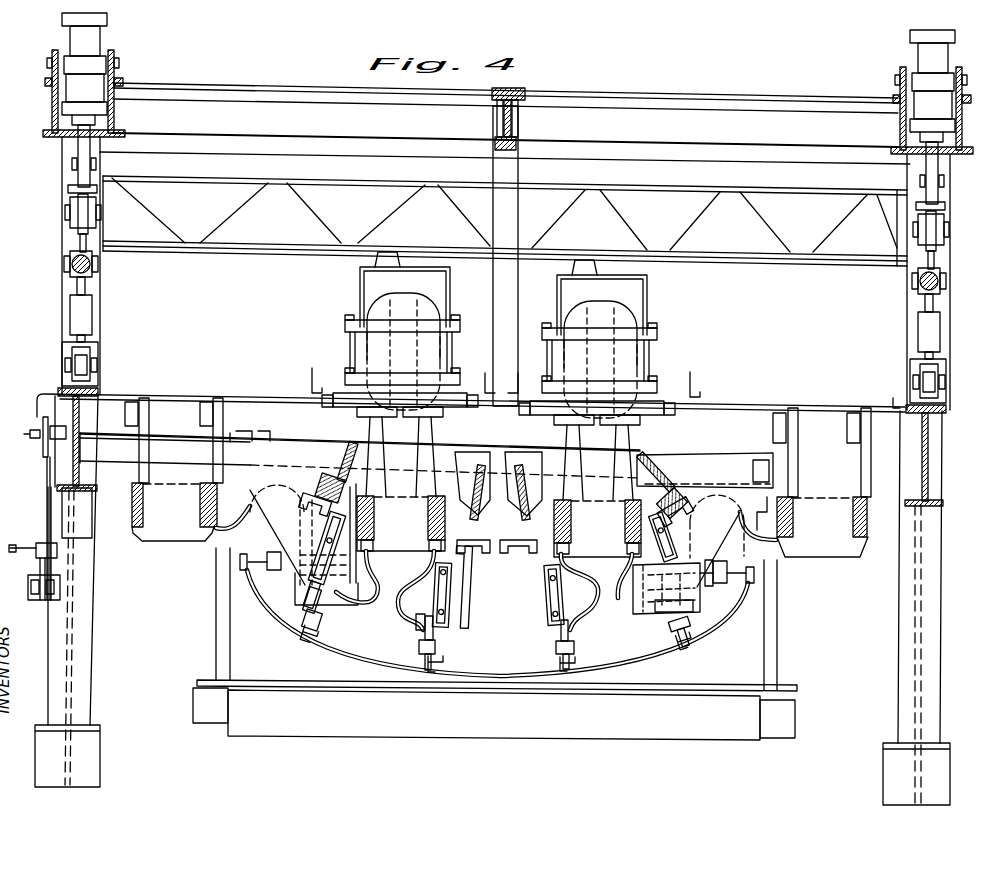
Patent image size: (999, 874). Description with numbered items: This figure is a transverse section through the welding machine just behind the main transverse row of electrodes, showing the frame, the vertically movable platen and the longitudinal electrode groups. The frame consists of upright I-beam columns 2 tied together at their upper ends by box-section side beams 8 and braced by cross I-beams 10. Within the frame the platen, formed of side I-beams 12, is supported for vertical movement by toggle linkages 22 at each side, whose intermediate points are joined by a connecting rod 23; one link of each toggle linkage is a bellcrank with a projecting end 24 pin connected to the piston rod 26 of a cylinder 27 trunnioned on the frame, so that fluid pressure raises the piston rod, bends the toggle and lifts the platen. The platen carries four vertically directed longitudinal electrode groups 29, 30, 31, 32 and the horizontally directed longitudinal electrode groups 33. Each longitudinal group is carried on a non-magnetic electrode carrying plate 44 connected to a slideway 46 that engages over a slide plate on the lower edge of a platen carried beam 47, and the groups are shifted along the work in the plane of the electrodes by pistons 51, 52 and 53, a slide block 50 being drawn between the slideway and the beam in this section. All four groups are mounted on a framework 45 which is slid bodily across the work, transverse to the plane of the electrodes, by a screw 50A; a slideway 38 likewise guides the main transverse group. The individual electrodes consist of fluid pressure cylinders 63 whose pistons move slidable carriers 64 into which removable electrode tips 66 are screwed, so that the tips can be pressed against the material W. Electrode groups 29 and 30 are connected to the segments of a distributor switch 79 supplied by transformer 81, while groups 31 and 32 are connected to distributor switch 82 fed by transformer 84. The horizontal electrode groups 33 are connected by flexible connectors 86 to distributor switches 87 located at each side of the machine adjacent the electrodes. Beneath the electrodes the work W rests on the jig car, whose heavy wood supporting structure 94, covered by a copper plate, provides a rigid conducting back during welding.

The upright I-beam column 2 is at (88, 647).
The side beam 8 is at (56, 93).
The cross I-beam 10 is at (524, 94).
The side I-beam 12 is at (73, 467).
The toggle linkage 22 is at (76, 315).
The connecting rod 23 is at (68, 265).
The projecting end 24 is at (78, 230).
The piston rod 26 is at (77, 147).
The cylinder 27 is at (508, 77).
The electrode group 29 is at (320, 620).
The electrode group 30 is at (435, 647).
The electrode group 31 is at (574, 643).
The electrode group 32 is at (674, 630).
The horizontally directed electrode group 33 is at (262, 575).
The slideway 38 is at (728, 566).
The non-magnetic electrode carrying plate 44 is at (330, 547).
The framework 45 is at (270, 454).
The slideway 46 is at (312, 511).
The platen carried beam 47 is at (345, 468).
The slide block 50 is at (322, 490).
The screw 50A is at (175, 434).
The piston 51 is at (480, 515).
The piston 52 is at (516, 520).
The piston 53 is at (705, 470).
The fluid pressure cylinder 63 is at (372, 565).
The slidable carrier 64 is at (700, 628).
The electrode tip 66 is at (306, 630).
The distributor switch 79 is at (401, 523).
The transformer 81 is at (378, 302).
The distributor switch 82 is at (597, 528).
The transformer 84 is at (640, 306).
The flexible connector 86 is at (496, 521).
The distributor switch 87 is at (500, 520).
The wood supporting structure 94 is at (495, 710).
The material to be welded W is at (497, 623).